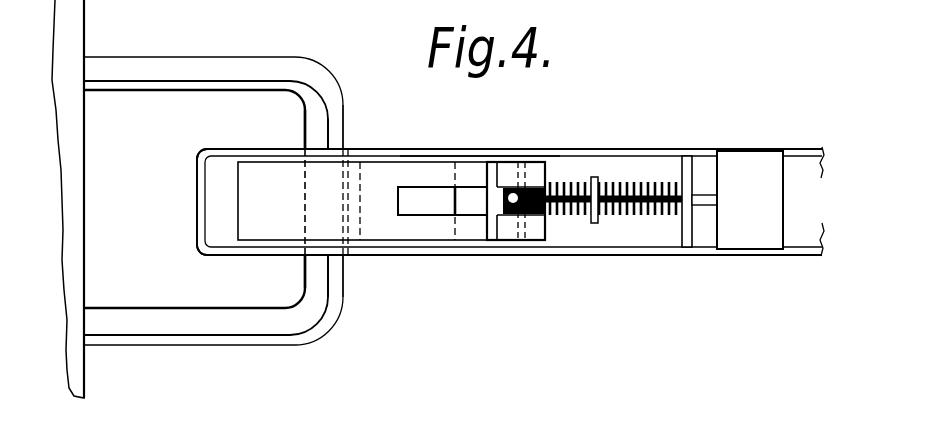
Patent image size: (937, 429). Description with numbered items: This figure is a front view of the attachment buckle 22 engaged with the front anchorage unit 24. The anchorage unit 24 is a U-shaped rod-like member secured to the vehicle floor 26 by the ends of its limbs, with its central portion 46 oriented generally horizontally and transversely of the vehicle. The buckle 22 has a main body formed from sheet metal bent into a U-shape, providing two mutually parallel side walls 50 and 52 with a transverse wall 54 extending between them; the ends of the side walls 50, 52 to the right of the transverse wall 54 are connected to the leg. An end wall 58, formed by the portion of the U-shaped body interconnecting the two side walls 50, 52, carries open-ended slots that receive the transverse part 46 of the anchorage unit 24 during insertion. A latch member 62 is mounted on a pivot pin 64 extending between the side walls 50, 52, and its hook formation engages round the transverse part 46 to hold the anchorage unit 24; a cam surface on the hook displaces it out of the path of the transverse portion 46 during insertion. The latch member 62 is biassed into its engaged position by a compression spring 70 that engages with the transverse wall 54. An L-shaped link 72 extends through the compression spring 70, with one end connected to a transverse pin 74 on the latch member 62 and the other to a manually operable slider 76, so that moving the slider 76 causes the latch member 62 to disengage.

The buckle 22 is at (570, 149).
The front anchorage unit 24 is at (238, 67).
The vehicle floor 26 is at (85, 142).
The central portion 46 is at (328, 122).
The side wall 50 is at (572, 250).
The side wall 52 is at (470, 147).
The transverse wall 54 is at (687, 233).
The end wall 58 is at (197, 212).
The latch member 62 is at (402, 226).
The pivot pin 64 is at (508, 243).
The compression spring 70 is at (643, 187).
The L-shaped link 72 is at (660, 217).
The transverse pin 74 is at (521, 190).
The manually operable slider 76 is at (750, 167).